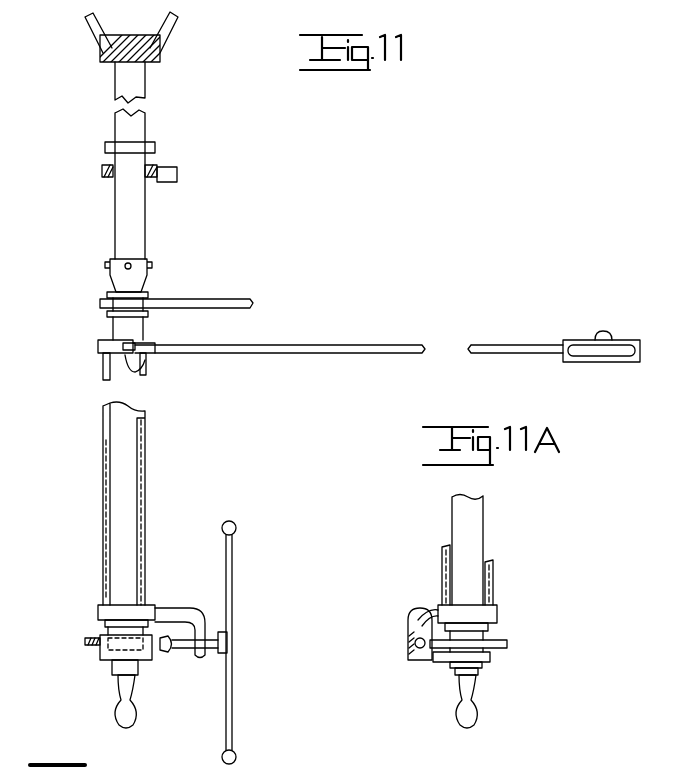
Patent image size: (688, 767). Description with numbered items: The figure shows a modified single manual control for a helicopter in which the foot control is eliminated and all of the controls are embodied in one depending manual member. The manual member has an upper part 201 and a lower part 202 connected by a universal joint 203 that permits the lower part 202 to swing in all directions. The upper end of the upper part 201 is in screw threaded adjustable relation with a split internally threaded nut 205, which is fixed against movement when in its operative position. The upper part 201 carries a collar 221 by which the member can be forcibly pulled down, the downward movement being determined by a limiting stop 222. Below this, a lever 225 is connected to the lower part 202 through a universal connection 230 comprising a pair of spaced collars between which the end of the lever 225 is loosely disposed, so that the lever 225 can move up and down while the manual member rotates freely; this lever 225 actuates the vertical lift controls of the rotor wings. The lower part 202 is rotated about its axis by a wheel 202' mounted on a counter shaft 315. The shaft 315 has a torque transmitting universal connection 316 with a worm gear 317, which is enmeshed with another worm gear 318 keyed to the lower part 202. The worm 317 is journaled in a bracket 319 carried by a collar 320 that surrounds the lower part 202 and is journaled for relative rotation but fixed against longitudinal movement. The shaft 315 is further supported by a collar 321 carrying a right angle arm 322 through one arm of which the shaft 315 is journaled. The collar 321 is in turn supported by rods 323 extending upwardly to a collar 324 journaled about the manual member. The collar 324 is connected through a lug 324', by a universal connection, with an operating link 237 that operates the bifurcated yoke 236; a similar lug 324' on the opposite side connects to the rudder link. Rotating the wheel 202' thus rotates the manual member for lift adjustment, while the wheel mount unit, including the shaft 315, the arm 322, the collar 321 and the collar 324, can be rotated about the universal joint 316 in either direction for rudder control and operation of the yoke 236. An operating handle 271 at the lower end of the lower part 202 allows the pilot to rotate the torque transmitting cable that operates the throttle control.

In FIG. 11, the upper part of manual control 201 is at (138, 230).
In FIG. 11, the lower part of manual control 202 is at (152, 497).
In FIG. 11A, the lower part of manual control 202 is at (497, 550).
In FIG. 11, the wheel 202' is at (260, 642).
In FIG. 11, the universal joint 203 is at (150, 262).
In FIG. 11, the internally threaded nut 205 is at (152, 63).
In FIG. 11, the collar 221 is at (155, 151).
In FIG. 11, the limiting stop 222 is at (102, 171).
In FIG. 11, the lever 225 is at (210, 305).
In FIG. 11, the universal connection 230 is at (107, 313).
In FIG. 11, the bifurcated yoke 236 is at (622, 362).
In FIG. 11, the operating link 237 is at (543, 353).
In FIG. 11, the operating handle 271 is at (118, 712).
In FIG. 11A, the operating handle 271 is at (480, 718).
In FIG. 11, the counter shaft 315 is at (187, 650).
In FIG. 11A, the counter shaft 315 is at (410, 656).
In FIG. 11, the torque transmitting universal connection 316 is at (162, 652).
In FIG. 11, the worm gear 317 is at (108, 646).
In FIG. 11, the worm gear 318 is at (85, 641).
In FIG. 11A, the worm gear 318 is at (507, 644).
In FIG. 11, the bracket 319 is at (105, 660).
In FIG. 11A, the bracket 319 is at (440, 657).
In FIG. 11A, the collar 320 is at (483, 665).
In FIG. 11, the collar 321 is at (98, 612).
In FIG. 11A, the collar 321 is at (467, 622).
In FIG. 11, the right angle arm 322 is at (168, 612).
In FIG. 11A, the right angle arm 322 is at (420, 612).
In FIG. 11, the rods 323 is at (143, 470).
In FIG. 11A, the rods 323 is at (495, 575).
In FIG. 11, the collar 324 is at (97, 350).
In FIG. 11, the lug 324' is at (93, 370).